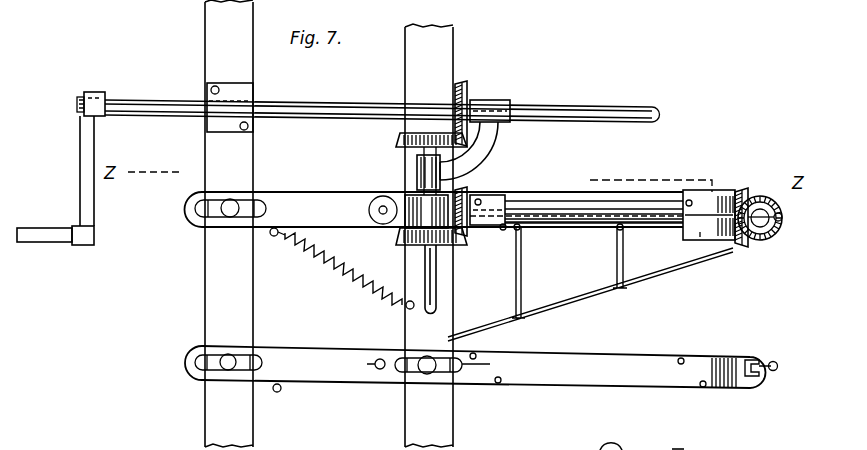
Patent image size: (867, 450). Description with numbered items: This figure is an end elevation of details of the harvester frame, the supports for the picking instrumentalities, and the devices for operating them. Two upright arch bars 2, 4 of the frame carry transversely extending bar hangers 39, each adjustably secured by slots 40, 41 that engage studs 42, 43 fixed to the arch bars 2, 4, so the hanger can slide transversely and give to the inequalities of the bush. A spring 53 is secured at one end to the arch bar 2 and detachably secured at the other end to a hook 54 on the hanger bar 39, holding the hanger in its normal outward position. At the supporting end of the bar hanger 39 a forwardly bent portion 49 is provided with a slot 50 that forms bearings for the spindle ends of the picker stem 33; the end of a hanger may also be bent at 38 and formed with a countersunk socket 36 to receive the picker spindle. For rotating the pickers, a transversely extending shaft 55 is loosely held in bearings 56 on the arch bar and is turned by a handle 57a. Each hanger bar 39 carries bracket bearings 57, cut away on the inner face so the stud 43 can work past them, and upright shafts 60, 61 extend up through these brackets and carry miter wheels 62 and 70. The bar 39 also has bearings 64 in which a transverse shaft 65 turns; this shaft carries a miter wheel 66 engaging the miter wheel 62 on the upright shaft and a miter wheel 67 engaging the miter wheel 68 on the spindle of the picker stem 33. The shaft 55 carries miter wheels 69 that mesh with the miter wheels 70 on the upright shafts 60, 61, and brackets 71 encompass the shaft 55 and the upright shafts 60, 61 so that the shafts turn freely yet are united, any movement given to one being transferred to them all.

The arch bar 2 is at (443, 322).
The arch bar 4 is at (243, 307).
The picker stem 33 is at (672, 236).
The countersunk socket 36 is at (628, 449).
The bent end 38 is at (585, 449).
The bar hanger 39 is at (592, 242).
The slot 40 is at (263, 352).
The slot 41 is at (460, 355).
The stud 42 is at (221, 369).
The stud 43 is at (431, 374).
The forwardly bent portion 49 is at (723, 200).
The slot 50 is at (760, 378).
The spring 53 is at (341, 278).
The hook 54 is at (263, 236).
The transversely extending shaft 55 is at (168, 117).
The bearing 56 is at (248, 93).
The bracket bearing 57 is at (405, 200).
The handle 57a is at (147, 220).
The upright shaft 60 is at (437, 265).
The upright shaft 61 is at (700, 232).
The miter wheel 62 is at (397, 241).
The bearing 64 is at (490, 201).
The transverse shaft 65 is at (606, 213).
The miter wheel 66 is at (467, 238).
The miter wheel 67 is at (748, 202).
The miter wheel 68 is at (768, 230).
The miter wheel 69 is at (470, 92).
The miter wheel 70 is at (398, 140).
The bracket 71 is at (500, 136).